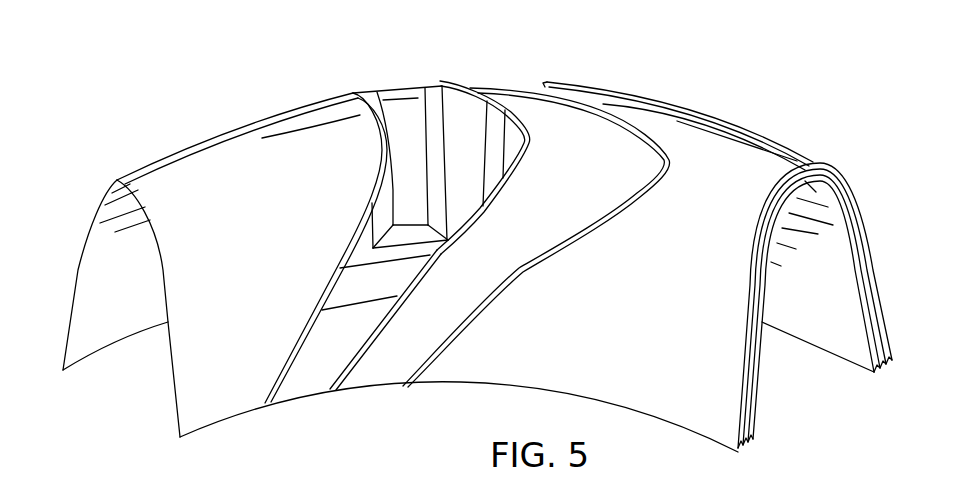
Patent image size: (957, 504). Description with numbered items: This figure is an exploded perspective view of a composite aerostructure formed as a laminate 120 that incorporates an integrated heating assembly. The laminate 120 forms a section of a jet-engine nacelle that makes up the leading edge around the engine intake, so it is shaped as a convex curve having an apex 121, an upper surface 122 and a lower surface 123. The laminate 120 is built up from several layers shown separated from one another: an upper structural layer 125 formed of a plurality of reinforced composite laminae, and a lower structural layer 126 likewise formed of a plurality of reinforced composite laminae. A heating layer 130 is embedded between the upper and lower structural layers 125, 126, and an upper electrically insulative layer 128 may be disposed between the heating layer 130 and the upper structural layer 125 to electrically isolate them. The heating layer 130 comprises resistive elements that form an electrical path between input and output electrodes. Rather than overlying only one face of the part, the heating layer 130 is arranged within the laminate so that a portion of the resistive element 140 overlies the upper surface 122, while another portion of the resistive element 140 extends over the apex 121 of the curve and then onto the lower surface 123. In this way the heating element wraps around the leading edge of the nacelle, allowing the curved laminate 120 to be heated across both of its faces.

The laminate 120 is at (766, 107).
The apex 121 is at (188, 146).
The upper surface 122 is at (88, 231).
The lower surface 123 is at (207, 413).
The upper structural layer 125 is at (654, 324).
The lower structural layer 126 is at (272, 229).
The upper electrically insulative layer 128 is at (617, 164).
The heating layer 130 is at (305, 385).
The resistive element 140 is at (422, 108).